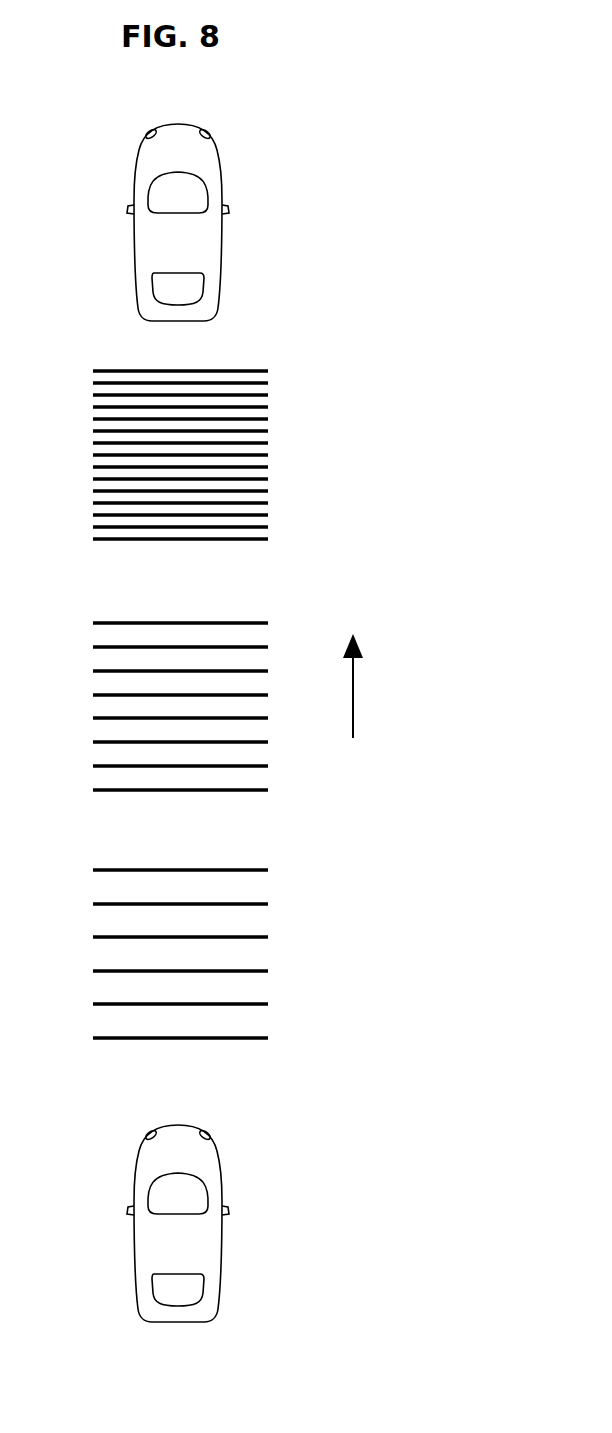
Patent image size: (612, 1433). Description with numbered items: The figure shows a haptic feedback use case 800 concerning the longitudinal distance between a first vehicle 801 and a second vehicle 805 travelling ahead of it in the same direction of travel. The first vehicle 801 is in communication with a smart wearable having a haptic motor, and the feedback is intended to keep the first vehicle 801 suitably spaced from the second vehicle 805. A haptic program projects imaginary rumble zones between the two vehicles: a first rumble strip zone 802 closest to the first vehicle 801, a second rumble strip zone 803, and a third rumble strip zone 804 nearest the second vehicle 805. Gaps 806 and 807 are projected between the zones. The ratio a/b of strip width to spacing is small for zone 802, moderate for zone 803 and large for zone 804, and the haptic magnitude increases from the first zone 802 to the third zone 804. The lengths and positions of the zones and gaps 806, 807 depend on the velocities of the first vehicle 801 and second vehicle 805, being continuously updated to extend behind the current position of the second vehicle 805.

The roadway scenario with lane markings 800 is at (411, 137).
The first vehicle 801 is at (177, 1123).
The first rumble strip zone 802 is at (119, 848).
The second rumble strip zone 803 is at (119, 601).
The third rumble strip zone 804 is at (119, 350).
The second vehicle 805 is at (177, 122).
The gap 806 is at (245, 826).
The gap 807 is at (245, 583).